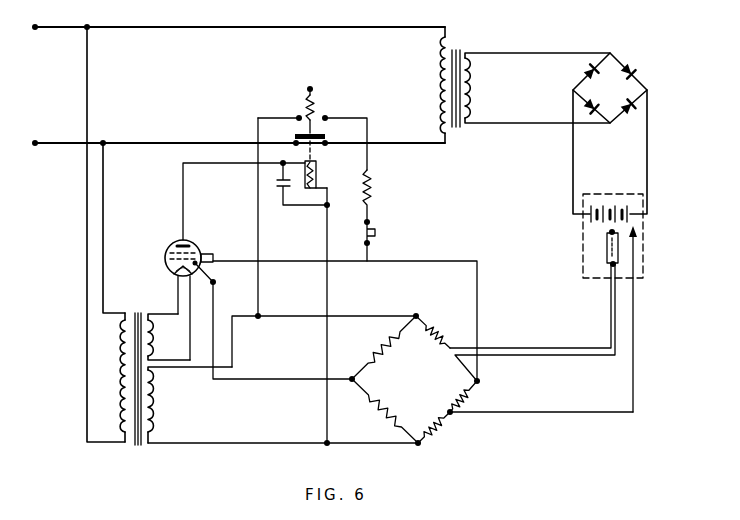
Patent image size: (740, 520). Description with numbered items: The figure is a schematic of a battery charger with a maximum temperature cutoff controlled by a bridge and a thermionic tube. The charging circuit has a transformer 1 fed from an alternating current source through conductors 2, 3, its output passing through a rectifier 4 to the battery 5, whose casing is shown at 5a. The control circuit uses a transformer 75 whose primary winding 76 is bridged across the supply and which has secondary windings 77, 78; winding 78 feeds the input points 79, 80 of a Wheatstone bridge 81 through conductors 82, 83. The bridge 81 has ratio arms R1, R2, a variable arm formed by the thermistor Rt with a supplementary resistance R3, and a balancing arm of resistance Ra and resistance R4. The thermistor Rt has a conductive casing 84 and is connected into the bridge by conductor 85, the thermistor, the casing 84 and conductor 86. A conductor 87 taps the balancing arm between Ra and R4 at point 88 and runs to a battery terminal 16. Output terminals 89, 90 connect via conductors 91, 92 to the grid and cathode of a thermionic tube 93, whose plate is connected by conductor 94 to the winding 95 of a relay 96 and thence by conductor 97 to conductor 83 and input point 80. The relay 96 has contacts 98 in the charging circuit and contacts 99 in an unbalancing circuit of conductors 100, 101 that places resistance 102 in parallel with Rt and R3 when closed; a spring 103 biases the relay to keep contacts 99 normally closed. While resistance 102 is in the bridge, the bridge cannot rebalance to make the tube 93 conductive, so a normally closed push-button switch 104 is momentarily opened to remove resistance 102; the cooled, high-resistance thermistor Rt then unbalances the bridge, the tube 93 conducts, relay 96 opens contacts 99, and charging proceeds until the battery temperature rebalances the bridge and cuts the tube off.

The transformer 1 is at (458, 49).
The conductor 2 is at (118, 27).
The conductor 3 is at (118, 143).
The rectifier 4 is at (610, 88).
The battery 5 is at (612, 205).
The casing of battery 5a is at (592, 194).
The battery terminal 16 is at (638, 233).
The transformer 75 is at (142, 452).
The primary winding 76 is at (117, 378).
The secondary winding 77 is at (158, 343).
The secondary winding 78 is at (160, 399).
The input point 79 is at (416, 315).
The input point 80 is at (419, 445).
The Wheatstone bridge 81 is at (419, 381).
The conductor 82 is at (366, 316).
The conductor 83 is at (337, 443).
The conductive casing 84 is at (619, 249).
The conductor 85 is at (540, 348).
The conductor 86 is at (540, 356).
The conductor 87 is at (526, 412).
The tap point 88 is at (451, 415).
The output terminal 89 is at (479, 382).
The output terminal 90 is at (351, 378).
The conductor 91 is at (425, 261).
The conductor 92 is at (258, 379).
The thermionic tube 93 is at (166, 254).
The conductor 94 is at (183, 212).
The relay winding 95 is at (318, 171).
The relay 96 is at (318, 153).
The conductor 97 is at (328, 284).
The contacts 98 is at (295, 142).
The contacts 99 is at (297, 116).
The conductor 100 is at (257, 214).
The conductor 101 is at (368, 135).
The unbalancing resistance 102 is at (372, 192).
The spring 103 is at (314, 104).
The push-button switch 104 is at (374, 226).
The ratio resistance arm R1 is at (384, 348).
The ratio resistance arm R2 is at (385, 411).
The supplementary resistance R3 is at (433, 339).
The resistance R4 is at (458, 393).
The resistance Ra is at (432, 423).
The thermistor Rt is at (614, 251).